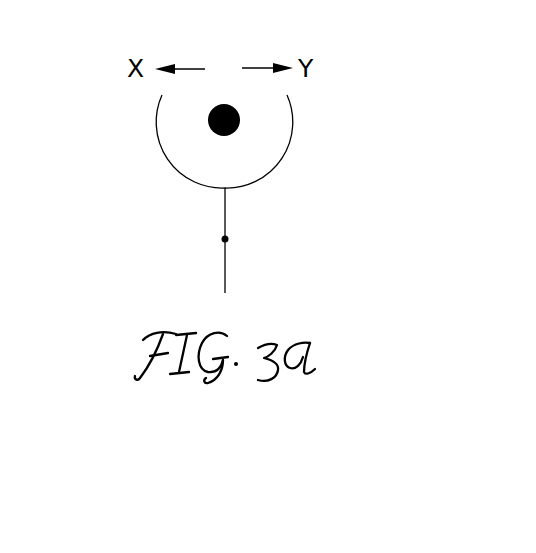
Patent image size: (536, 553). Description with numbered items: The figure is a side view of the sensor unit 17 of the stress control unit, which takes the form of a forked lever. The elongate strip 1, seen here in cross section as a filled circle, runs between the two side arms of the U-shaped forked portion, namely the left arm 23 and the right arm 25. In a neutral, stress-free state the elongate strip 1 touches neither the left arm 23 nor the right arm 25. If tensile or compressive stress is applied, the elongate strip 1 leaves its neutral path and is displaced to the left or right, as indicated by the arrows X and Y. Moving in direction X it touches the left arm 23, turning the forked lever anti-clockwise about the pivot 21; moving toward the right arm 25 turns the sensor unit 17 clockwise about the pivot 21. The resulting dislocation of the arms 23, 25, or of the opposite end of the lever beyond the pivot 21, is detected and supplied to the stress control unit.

The elongate strip 1 is at (225, 104).
The sensor unit 17 is at (316, 193).
The pivot 21 is at (229, 240).
The left arm 23 is at (162, 103).
The right arm 25 is at (288, 102).